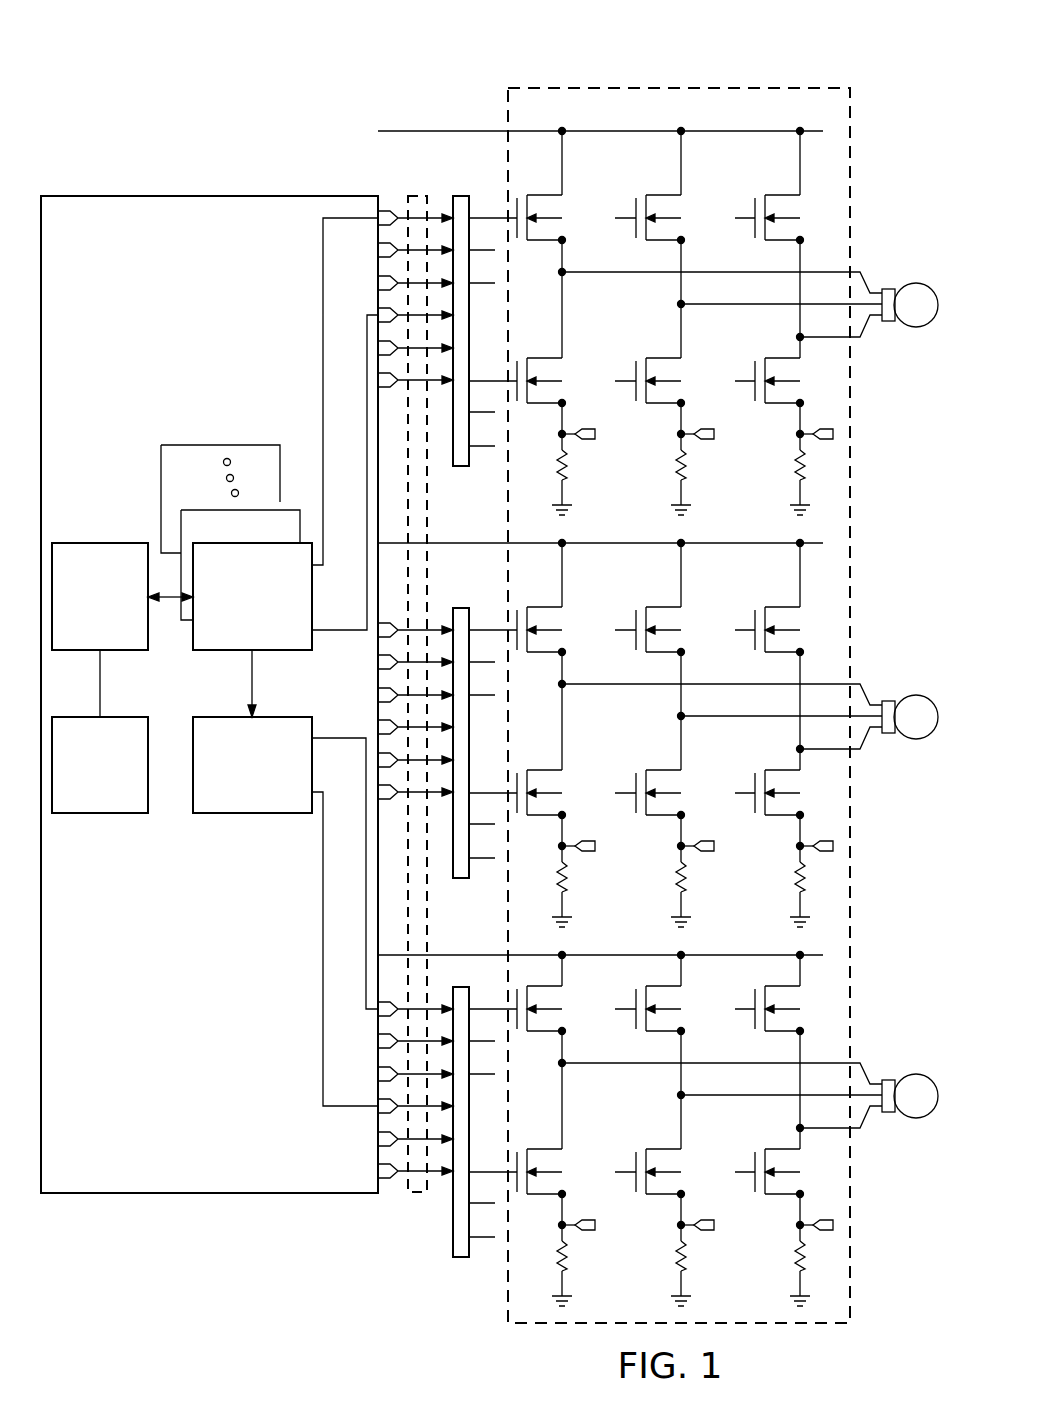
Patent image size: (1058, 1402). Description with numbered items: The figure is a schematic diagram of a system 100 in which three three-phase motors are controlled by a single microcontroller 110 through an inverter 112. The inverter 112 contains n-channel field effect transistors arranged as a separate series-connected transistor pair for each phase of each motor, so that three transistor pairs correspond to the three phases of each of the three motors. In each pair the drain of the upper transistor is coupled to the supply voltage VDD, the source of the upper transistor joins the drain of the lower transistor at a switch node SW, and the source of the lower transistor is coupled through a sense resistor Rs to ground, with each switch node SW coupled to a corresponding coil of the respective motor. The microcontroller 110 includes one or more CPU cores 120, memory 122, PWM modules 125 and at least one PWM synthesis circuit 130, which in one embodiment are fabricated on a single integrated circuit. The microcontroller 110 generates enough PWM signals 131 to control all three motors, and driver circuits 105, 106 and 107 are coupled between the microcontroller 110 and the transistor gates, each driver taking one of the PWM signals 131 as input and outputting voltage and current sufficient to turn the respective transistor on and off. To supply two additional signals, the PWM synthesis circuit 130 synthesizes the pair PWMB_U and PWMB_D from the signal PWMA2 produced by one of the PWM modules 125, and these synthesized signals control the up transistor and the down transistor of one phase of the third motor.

The system 100 is at (200, 58).
The microcontroller 110 is at (118, 192).
The inverter 112 is at (740, 82).
The CPU core 120 is at (88, 543).
The memory 122 is at (90, 816).
The PWM modules 125 is at (226, 652).
The PWM synthesis circuit 130 is at (240, 816).
The PWM signals 131 is at (410, 192).
The driver circuit 105 is at (462, 196).
The driver circuit 106 is at (462, 608).
The driver circuit 107 is at (462, 1259).